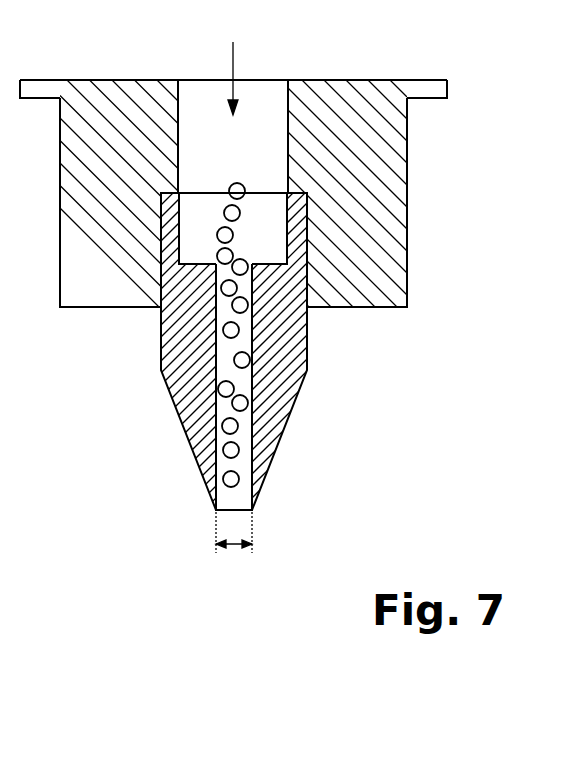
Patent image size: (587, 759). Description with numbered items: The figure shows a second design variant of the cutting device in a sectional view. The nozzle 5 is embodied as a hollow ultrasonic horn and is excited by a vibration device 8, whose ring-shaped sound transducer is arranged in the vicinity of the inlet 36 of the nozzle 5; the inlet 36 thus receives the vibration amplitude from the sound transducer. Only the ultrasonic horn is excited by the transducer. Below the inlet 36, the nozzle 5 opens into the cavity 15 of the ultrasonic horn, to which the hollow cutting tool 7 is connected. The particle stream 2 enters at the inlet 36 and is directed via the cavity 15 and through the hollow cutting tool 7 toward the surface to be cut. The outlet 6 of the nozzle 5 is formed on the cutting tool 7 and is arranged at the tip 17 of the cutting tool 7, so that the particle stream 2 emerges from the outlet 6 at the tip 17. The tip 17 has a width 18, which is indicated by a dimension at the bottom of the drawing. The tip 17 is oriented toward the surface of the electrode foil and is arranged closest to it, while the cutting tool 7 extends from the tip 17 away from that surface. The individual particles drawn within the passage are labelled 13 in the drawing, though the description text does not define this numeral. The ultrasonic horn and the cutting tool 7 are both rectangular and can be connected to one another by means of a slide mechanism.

The particle stream 2 is at (233, 53).
The nozzle 5 is at (400, 190).
The outlet 6 is at (232, 511).
The cutting tool 7 is at (282, 394).
The vibration device 8 is at (427, 88).
The particles 13 is at (239, 328).
The cavity 15 is at (270, 237).
The tip 17 is at (216, 512).
The width 18 is at (235, 547).
The inlet 36 is at (200, 95).